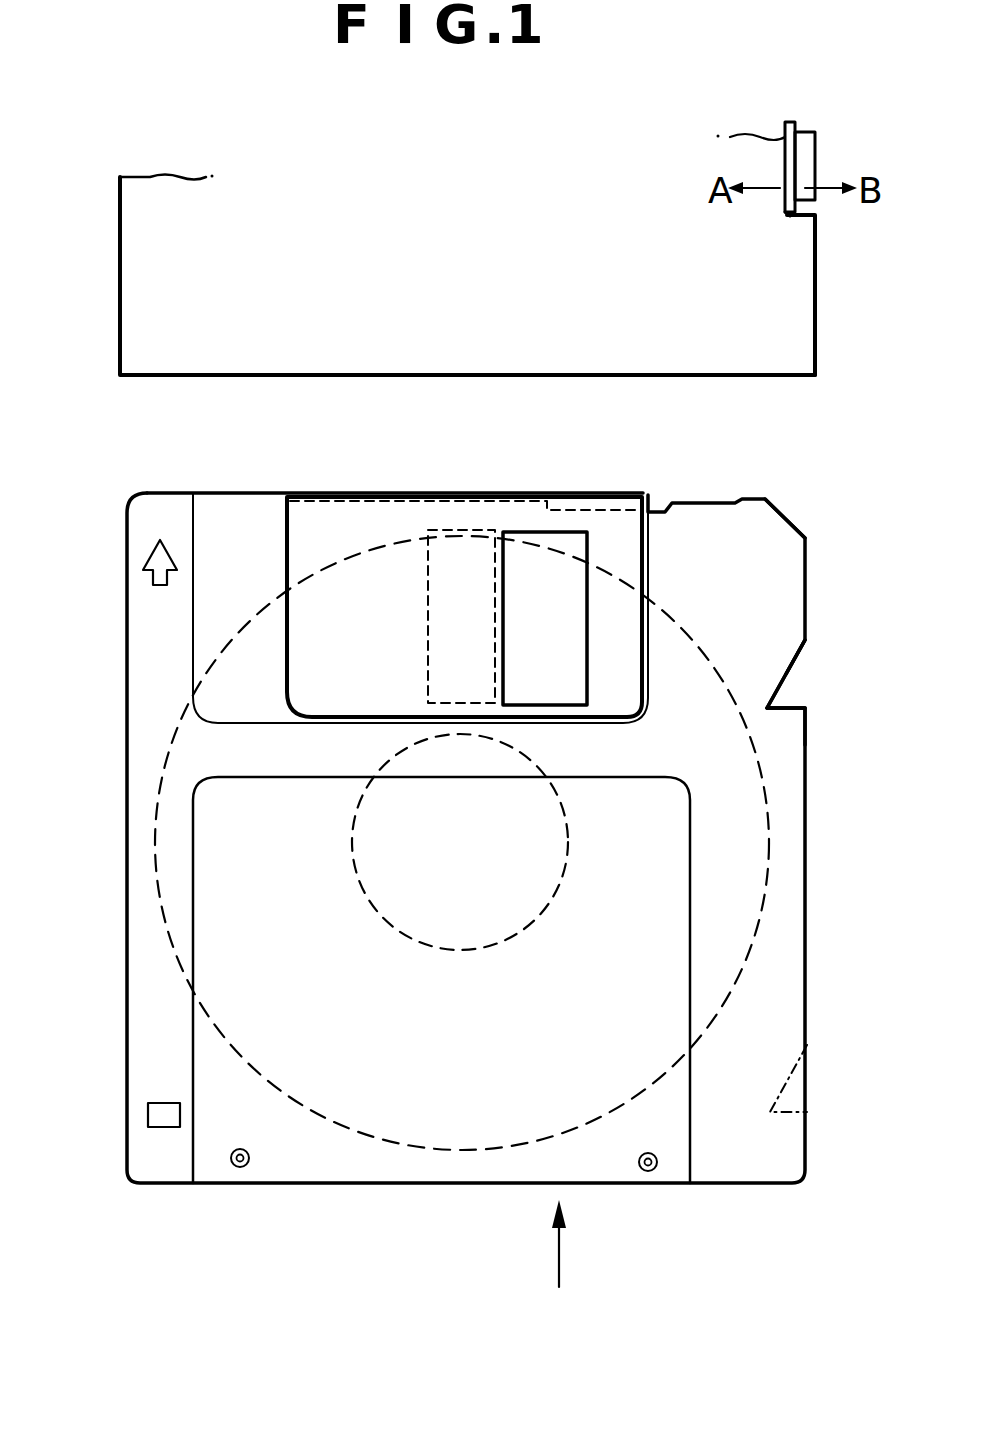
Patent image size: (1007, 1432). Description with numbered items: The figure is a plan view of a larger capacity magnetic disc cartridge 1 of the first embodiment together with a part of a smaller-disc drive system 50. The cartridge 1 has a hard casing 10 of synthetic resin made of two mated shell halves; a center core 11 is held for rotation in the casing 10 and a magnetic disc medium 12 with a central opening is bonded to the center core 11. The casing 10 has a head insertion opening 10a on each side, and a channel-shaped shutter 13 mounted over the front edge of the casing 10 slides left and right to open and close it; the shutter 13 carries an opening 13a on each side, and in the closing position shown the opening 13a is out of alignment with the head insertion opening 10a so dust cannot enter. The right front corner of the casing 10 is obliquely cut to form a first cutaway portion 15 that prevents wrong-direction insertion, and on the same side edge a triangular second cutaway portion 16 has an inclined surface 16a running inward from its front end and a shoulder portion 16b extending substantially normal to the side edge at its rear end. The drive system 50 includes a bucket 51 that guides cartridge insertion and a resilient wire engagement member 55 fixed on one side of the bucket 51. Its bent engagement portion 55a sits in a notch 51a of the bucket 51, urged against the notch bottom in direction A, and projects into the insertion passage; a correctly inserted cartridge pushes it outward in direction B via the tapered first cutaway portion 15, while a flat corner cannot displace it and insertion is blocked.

The larger capacity magnetic disc cartridge 1 is at (94, 523).
The hard casing 10 is at (121, 708).
The head insertion opening 10a is at (446, 495).
The center core 11 is at (405, 908).
The magnetic disc medium 12 is at (166, 926).
The shutter 13 is at (384, 487).
The opening 13a is at (515, 562).
The first cutaway portion 15 is at (791, 521).
The second cutaway portion 16 is at (804, 689).
The inclined surface 16a is at (788, 668).
The shoulder portion 16b is at (805, 711).
The smaller-disc drive system 50 is at (105, 313).
The bucket 51 is at (800, 322).
The notch 51a is at (800, 212).
The engagement member 55 is at (800, 152).
The engagement portion 55a is at (780, 210).